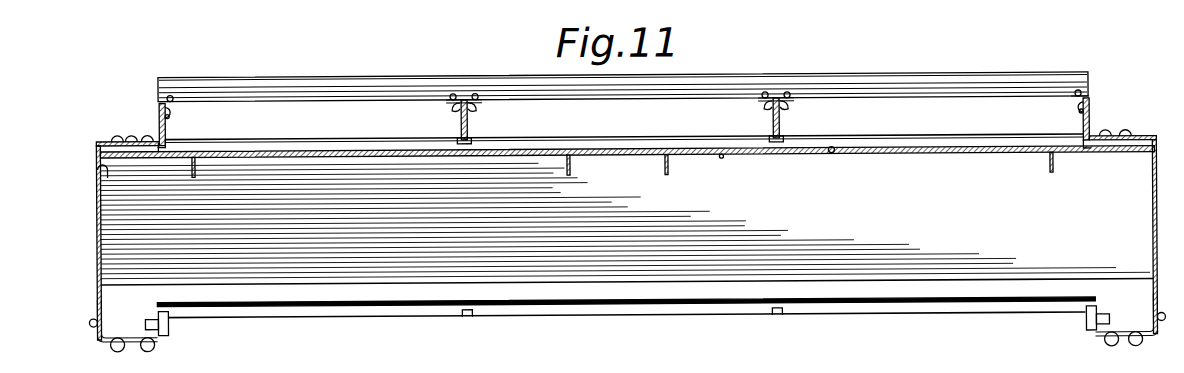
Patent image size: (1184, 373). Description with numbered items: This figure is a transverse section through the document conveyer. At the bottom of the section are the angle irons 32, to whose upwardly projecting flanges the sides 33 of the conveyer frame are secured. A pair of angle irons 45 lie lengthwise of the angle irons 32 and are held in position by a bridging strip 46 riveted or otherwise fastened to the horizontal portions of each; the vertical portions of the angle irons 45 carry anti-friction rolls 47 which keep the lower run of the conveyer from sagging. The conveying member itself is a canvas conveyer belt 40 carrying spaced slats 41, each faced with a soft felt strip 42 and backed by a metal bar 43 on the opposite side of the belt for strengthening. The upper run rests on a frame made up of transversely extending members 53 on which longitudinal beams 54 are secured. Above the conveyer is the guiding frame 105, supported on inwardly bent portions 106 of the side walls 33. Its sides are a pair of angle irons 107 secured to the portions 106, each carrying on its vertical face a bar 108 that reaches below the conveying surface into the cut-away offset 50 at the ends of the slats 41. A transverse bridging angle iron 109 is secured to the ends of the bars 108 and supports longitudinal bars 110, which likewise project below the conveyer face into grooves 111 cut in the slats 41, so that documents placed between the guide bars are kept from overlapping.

The frame 105 is at (966, 78).
The bridging angle iron 109 is at (879, 79).
The angle irons 107 is at (136, 113).
The inwardly bent portions 106 is at (117, 142).
The bar 108 is at (170, 113).
The offset end 50 is at (168, 140).
The beams 54 is at (126, 160).
The sides 33 is at (96, 216).
The transversely extending members 53 is at (626, 222).
The bars 110 is at (460, 127).
The grooves 111 is at (468, 129).
The slats 41 is at (649, 143).
The strips 42 is at (591, 142).
The bar 43 is at (722, 163).
The conveyer belt 40 is at (832, 158).
The angle irons 32 is at (110, 330).
The angle irons 45 is at (164, 339).
The anti-friction rolls 47 is at (172, 334).
The bridging strip 46 is at (124, 348).